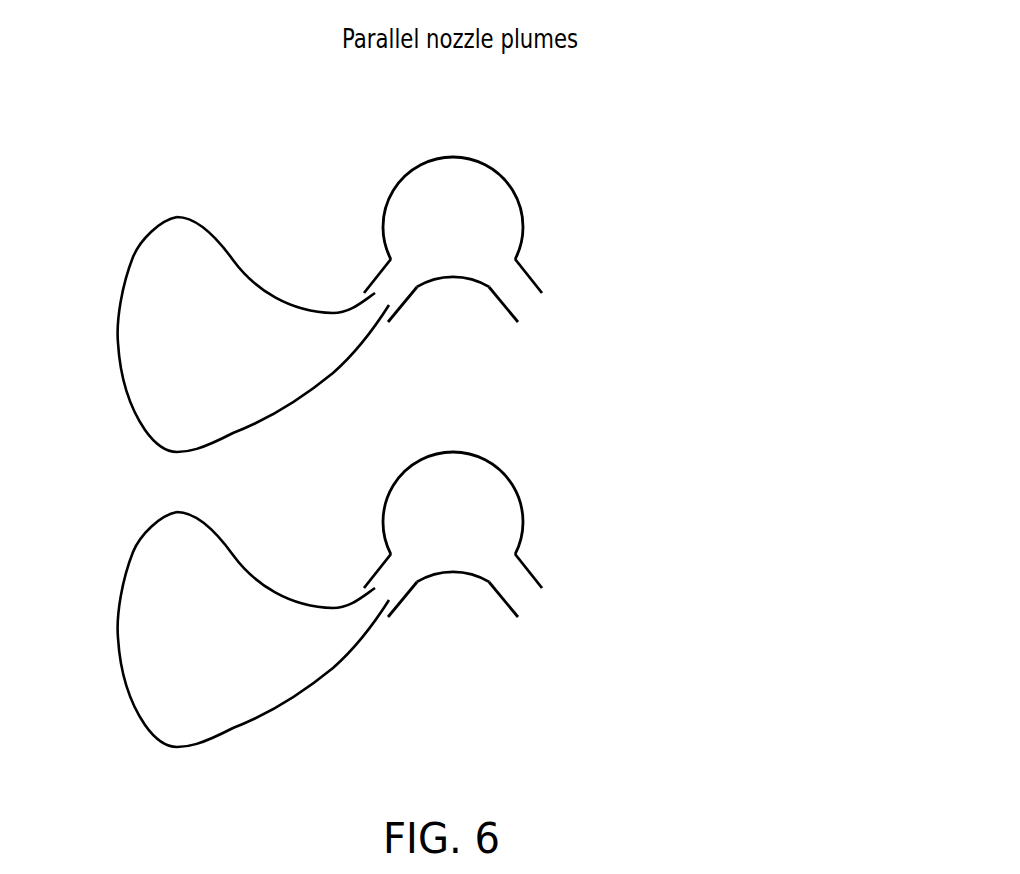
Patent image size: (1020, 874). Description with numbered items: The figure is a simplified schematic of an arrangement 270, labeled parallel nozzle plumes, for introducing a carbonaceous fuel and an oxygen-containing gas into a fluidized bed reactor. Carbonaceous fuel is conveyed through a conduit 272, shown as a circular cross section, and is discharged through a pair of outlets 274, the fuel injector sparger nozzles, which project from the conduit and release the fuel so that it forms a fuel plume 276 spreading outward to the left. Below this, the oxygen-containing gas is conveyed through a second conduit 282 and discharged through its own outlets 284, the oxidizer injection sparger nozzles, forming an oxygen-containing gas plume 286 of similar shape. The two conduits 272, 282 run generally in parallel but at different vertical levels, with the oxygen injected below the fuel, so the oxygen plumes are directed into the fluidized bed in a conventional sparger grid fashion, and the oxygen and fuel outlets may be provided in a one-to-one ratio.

The arrangement 270 is at (645, 97).
The conduit 272 is at (455, 157).
The outlets 274 is at (369, 289).
The fuel plume 276 is at (177, 217).
The conduit 282 is at (455, 452).
The outlets 284 is at (366, 586).
The oxygen-containing gas plume 286 is at (125, 574).